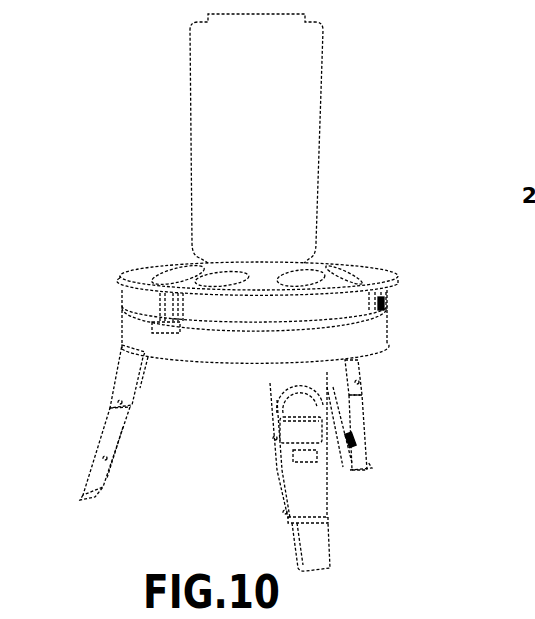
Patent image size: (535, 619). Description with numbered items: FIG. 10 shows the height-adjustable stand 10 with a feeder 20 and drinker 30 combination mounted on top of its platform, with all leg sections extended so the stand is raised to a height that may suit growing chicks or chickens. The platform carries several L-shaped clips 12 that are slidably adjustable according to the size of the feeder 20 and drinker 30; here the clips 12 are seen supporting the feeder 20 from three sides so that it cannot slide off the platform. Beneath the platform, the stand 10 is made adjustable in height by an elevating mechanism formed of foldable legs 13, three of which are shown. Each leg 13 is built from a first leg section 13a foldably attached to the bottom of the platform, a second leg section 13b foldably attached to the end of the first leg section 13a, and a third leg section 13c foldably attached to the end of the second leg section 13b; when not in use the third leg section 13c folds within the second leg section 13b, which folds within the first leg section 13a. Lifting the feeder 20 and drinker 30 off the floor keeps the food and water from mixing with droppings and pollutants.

The stand 10 is at (398, 349).
The clips 12 is at (177, 323).
The legs 13 is at (246, 437).
The first leg section 13a is at (125, 373).
The second leg section 13b is at (105, 440).
The third leg section 13c is at (60, 455).
The feeder 20 is at (138, 277).
The drinker 30 is at (208, 188).